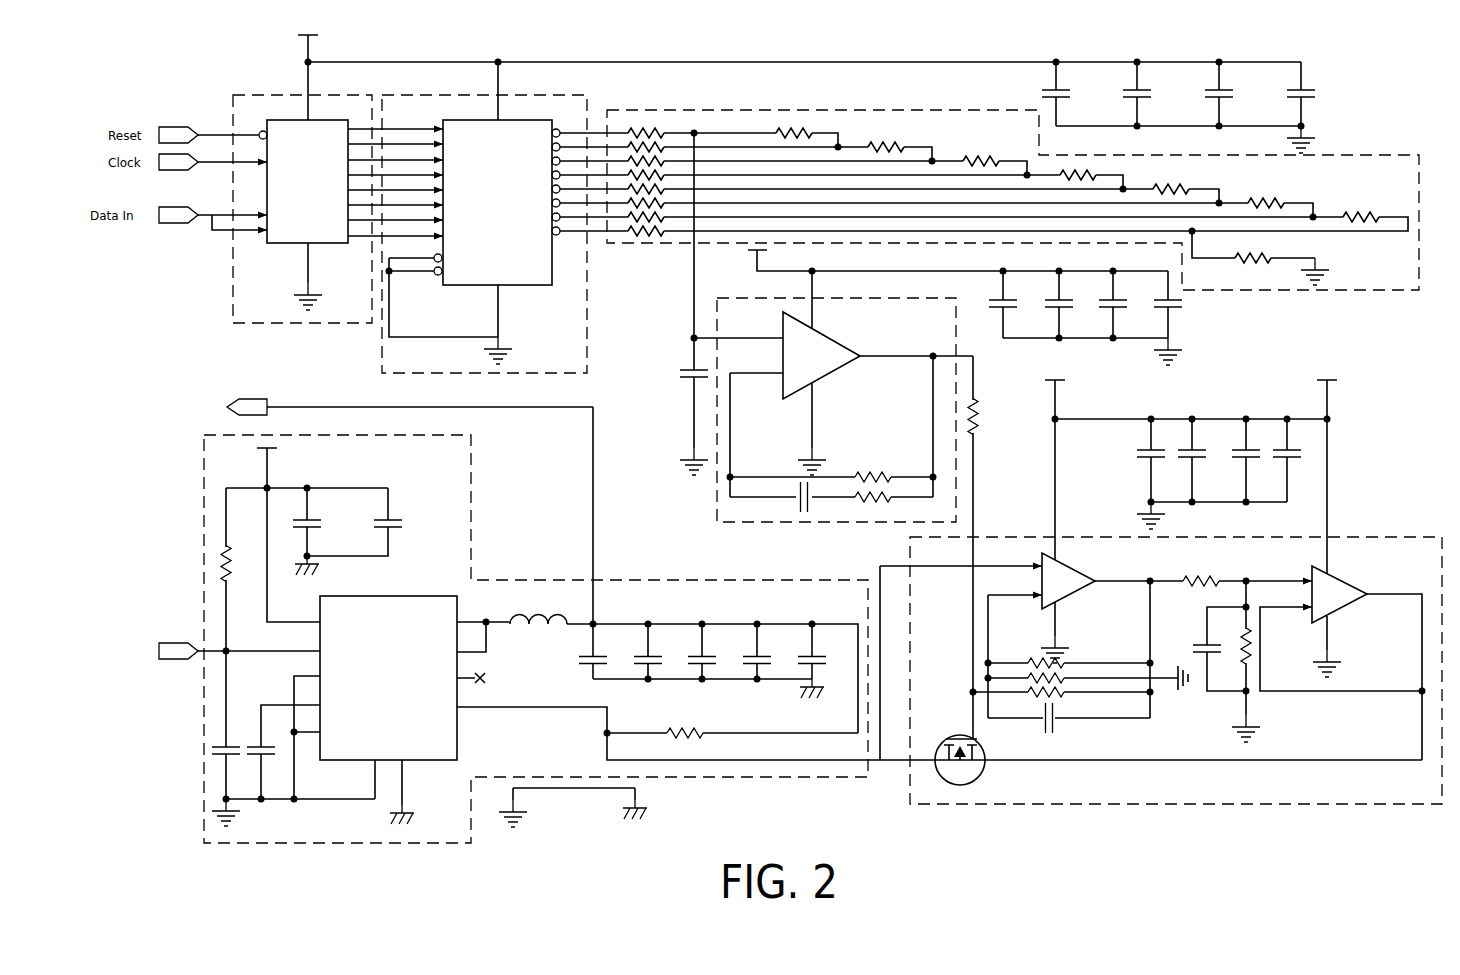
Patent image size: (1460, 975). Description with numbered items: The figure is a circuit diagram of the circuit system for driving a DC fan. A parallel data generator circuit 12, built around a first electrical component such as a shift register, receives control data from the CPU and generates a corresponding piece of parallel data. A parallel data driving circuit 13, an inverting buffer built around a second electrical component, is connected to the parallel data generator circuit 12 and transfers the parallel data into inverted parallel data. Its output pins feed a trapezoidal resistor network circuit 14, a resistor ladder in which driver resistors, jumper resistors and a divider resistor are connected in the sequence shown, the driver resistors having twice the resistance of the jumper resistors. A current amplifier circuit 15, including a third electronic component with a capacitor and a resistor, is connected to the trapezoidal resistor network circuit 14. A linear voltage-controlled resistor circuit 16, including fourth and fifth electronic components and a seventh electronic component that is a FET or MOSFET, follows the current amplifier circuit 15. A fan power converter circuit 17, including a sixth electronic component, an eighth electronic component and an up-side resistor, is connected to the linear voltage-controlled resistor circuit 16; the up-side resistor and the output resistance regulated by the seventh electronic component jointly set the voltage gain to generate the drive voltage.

The parallel data generator circuit 12 is at (233, 290).
The parallel data driving circuit 13 is at (587, 322).
The trapezoidal resistor network circuit 14 is at (1380, 155).
The current amplifier circuit 15 is at (717, 489).
The linear voltage-controlled resistor circuit 16 is at (1399, 537).
The fan power converter circuit 17 is at (204, 469).